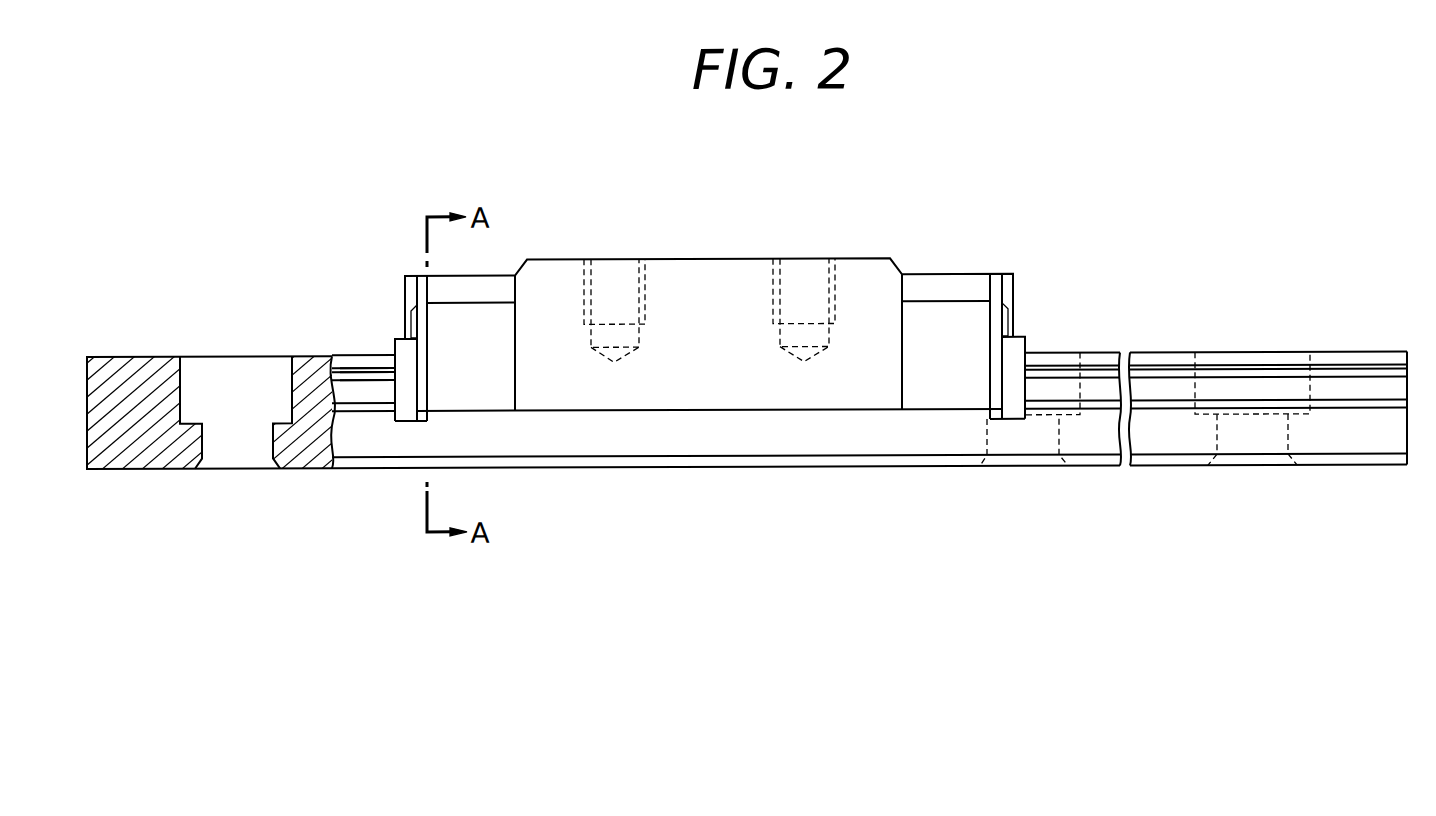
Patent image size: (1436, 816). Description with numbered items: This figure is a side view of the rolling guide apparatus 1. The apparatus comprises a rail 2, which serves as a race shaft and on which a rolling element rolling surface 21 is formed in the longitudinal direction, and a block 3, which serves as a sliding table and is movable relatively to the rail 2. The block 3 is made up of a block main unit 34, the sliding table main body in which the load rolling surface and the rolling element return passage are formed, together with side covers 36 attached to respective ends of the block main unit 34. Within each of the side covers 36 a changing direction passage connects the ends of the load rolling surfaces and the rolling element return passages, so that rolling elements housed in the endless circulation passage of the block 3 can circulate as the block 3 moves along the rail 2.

The rolling guide apparatus 1 is at (681, 476).
The rail 2 is at (1277, 348).
The block 3 is at (710, 336).
The rolling element rolling surface 21 is at (363, 388).
The block main unit 34 is at (522, 243).
The side covers 36 is at (510, 185).